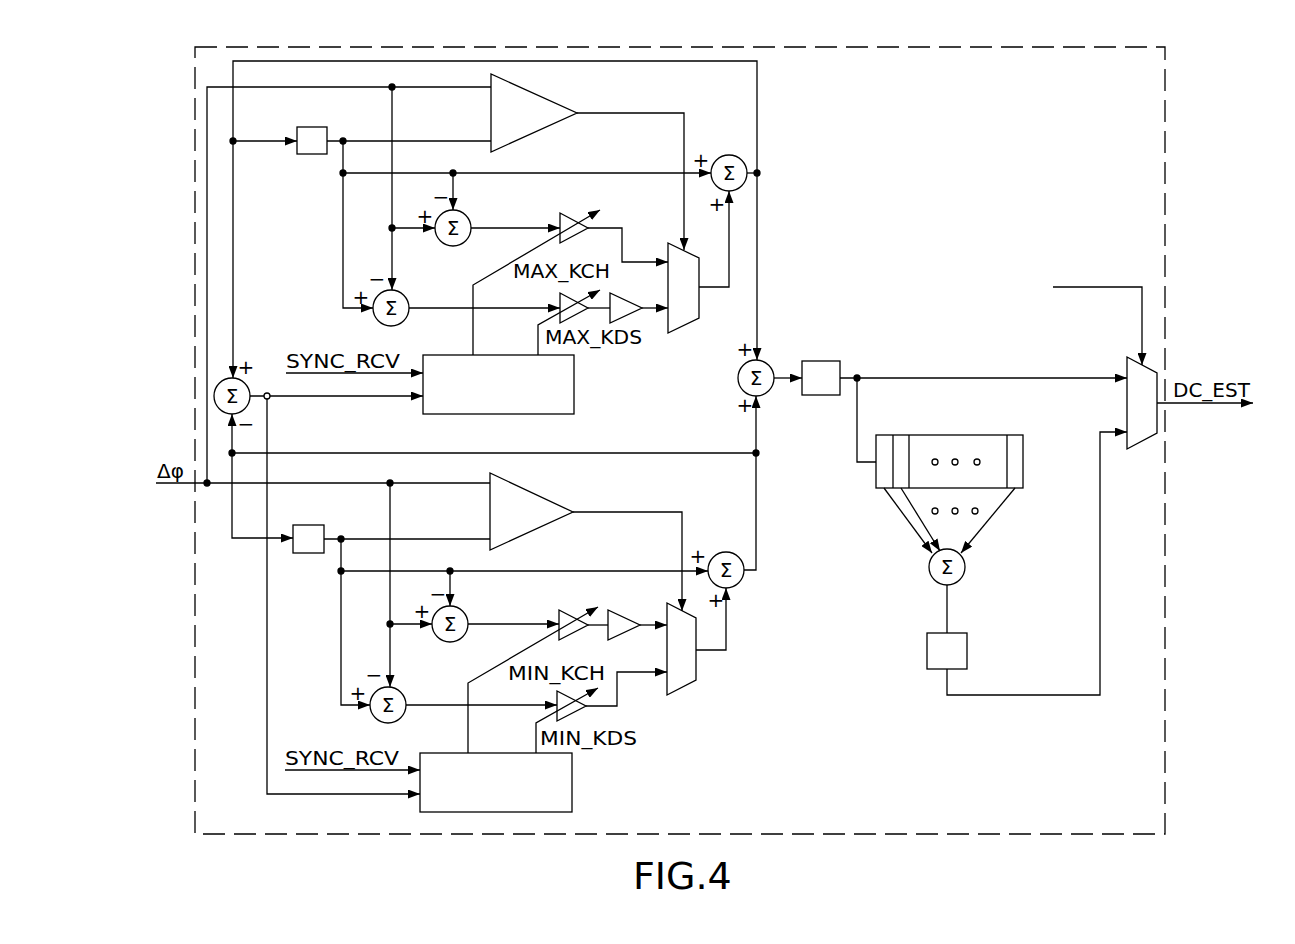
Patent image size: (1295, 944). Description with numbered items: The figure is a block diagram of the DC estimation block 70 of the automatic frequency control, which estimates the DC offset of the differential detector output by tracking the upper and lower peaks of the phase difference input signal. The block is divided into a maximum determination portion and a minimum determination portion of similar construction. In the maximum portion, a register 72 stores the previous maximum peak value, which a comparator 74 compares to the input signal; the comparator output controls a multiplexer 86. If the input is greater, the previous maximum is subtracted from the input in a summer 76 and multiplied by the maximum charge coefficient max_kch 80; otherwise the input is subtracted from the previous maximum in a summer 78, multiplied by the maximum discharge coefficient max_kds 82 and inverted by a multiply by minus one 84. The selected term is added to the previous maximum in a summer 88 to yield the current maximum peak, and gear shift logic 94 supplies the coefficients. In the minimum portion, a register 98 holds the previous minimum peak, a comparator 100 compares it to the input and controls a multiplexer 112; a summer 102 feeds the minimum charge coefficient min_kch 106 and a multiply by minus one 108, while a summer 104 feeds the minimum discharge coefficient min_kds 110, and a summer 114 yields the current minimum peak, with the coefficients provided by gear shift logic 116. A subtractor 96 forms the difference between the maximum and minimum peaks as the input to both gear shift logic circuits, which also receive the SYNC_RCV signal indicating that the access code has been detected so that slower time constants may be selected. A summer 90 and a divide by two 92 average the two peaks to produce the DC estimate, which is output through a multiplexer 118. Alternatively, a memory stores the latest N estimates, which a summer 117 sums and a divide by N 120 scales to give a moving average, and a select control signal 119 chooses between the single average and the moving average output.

The DC estimation block 70 is at (1052, 846).
The register 72 is at (311, 155).
The comparator 74 is at (545, 93).
The summer 76 is at (462, 247).
The summer 78 is at (374, 318).
The maximum charge coefficient max_kch 80 is at (576, 213).
The maximum discharge coefficient max_kds 82 is at (560, 300).
The multiply by minus one 84 is at (618, 296).
The multiplexer 86 is at (663, 242).
The summer 88 is at (733, 154).
The summer 90 is at (738, 378).
The divide by two 92 is at (822, 360).
The gear shift logic 94 is at (574, 383).
The subtractor 96 is at (250, 386).
The register 98 is at (311, 553).
The comparator 100 is at (545, 493).
The summer 102 is at (460, 642).
The summer 104 is at (372, 720).
The minimum charge coefficient min_kch 106 is at (566, 610).
The multiply by minus one 108 is at (618, 612).
The minimum discharge coefficient min_kds 110 is at (583, 712).
The multiplexer 112 is at (699, 666).
The summer 114 is at (741, 585).
The gear shift logic 116 is at (572, 783).
The summer 117 is at (928, 575).
The multiplexer 118 is at (1147, 450).
The select control signal 119 is at (1112, 290).
The divide by N 120 is at (927, 650).